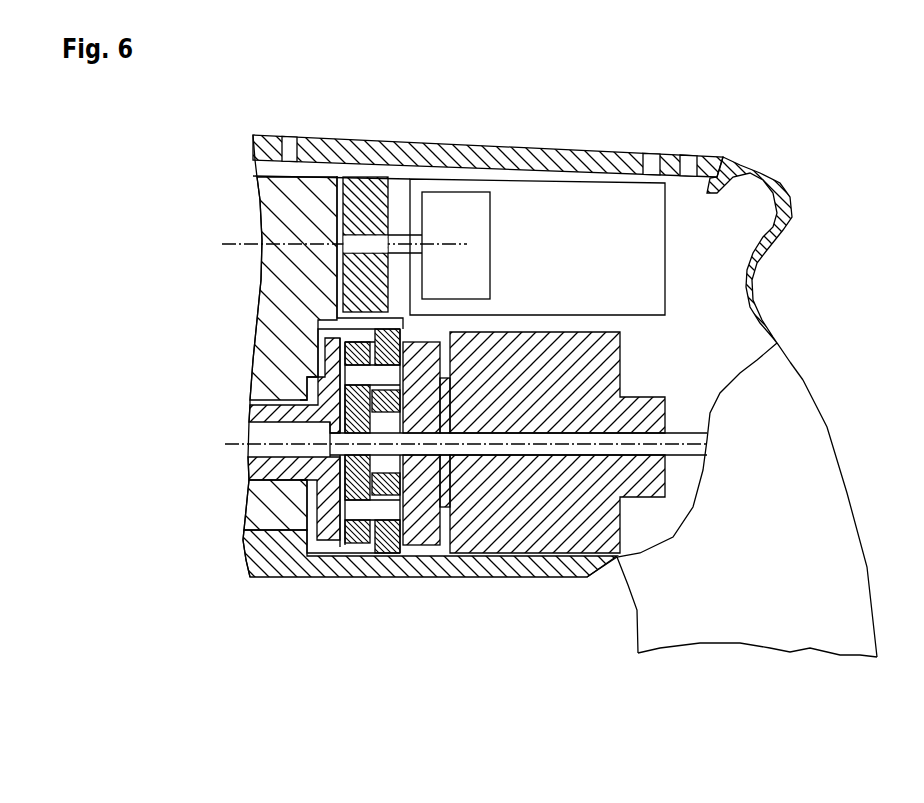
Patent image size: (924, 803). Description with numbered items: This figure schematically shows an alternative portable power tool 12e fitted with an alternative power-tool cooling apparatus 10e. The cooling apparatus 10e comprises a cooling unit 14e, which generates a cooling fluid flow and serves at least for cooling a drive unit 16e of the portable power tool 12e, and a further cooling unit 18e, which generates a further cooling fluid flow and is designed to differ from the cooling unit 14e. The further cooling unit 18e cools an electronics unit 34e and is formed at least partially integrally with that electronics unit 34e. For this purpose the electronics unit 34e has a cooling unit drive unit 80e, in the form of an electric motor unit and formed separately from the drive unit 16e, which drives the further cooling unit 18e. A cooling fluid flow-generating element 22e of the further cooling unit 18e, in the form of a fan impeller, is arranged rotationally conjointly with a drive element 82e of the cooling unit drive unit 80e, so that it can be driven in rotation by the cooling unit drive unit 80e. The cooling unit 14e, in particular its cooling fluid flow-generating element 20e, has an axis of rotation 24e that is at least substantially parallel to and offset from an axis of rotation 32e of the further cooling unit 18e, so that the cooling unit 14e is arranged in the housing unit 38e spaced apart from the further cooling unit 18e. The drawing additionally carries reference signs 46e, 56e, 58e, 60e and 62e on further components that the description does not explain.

The power-tool cooling apparatus 10e is at (492, 116).
The portable power tool 12e is at (215, 135).
The cooling unit 14e is at (353, 580).
The drive unit 16e is at (562, 608).
The further cooling unit 18e is at (396, 170).
The cooling fluid flow-generating element 20e is at (427, 556).
The cooling fluid flow-generating element 22e is at (356, 178).
The axis of rotation 24e is at (243, 437).
The axis of rotation 32e is at (227, 220).
The electronics unit 34e is at (570, 225).
The housing unit 38e is at (290, 128).
The bracket 46e is at (326, 162).
The shaft 56e is at (243, 437).
The rotor 58e is at (712, 293).
The housing lip 60e is at (710, 136).
The seals 62e is at (657, 208).
The cooling unit drive unit 80e is at (503, 197).
The drive element 82e is at (397, 240).